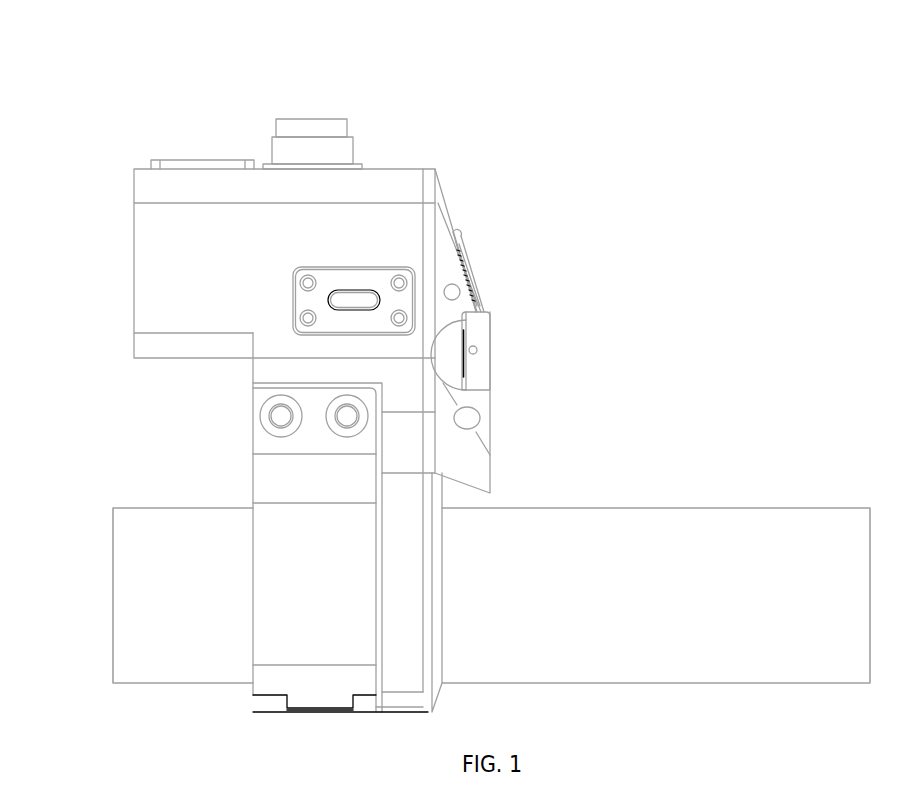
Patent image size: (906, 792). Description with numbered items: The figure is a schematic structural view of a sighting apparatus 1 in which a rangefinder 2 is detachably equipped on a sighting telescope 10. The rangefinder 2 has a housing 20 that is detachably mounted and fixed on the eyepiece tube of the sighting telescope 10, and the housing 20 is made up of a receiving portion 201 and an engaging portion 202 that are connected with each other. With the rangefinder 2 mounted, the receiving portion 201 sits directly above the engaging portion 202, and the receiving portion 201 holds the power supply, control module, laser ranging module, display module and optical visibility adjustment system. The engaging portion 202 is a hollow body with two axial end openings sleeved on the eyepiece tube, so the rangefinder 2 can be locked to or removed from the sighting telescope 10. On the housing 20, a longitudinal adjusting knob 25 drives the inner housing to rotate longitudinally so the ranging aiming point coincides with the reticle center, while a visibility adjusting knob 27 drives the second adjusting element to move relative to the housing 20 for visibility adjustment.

The sighting apparatus 1 is at (23, 55).
The rangefinder 2 is at (468, 183).
The sighting telescope 10 is at (567, 508).
The housing 20 is at (118, 272).
The receiving portion 201 is at (134, 320).
The engaging portion 202 is at (253, 487).
The longitudinal adjusting knob 25 is at (308, 126).
The visibility adjusting knob 27 is at (480, 342).